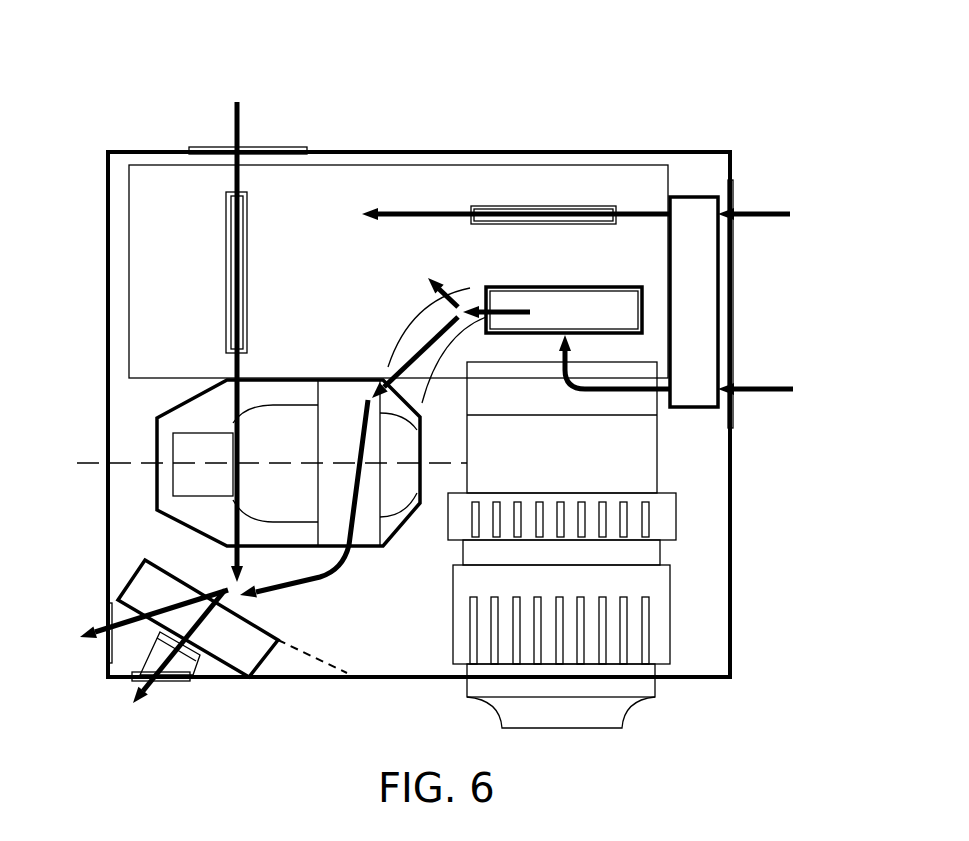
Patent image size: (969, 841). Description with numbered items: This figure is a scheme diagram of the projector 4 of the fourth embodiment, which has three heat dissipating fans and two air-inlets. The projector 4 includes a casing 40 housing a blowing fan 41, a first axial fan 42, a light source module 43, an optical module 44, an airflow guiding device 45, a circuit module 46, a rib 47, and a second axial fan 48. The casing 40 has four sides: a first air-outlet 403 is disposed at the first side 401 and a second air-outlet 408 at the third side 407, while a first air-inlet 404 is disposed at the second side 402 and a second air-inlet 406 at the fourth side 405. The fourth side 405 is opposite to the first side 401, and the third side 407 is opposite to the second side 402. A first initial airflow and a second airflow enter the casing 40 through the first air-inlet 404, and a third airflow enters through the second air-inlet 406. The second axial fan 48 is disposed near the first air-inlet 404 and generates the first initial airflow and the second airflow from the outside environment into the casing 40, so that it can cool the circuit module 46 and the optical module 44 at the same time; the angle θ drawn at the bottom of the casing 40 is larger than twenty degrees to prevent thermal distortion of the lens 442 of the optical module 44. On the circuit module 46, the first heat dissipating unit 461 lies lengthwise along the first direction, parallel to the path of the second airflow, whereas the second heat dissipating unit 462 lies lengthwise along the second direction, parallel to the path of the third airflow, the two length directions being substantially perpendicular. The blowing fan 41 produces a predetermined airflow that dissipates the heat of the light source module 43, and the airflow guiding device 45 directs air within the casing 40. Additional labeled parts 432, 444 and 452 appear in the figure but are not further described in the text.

The projector 4 is at (752, 165).
The casing 40 is at (108, 150).
The first side 401 is at (385, 678).
The second side 402 is at (730, 565).
The first air-outlet 403 is at (177, 682).
The first air-inlet 404 is at (733, 310).
The fourth side 405 is at (430, 150).
The second air-inlet 406 is at (278, 150).
The third side 407 is at (108, 525).
The second air-outlet 408 is at (108, 656).
The blowing fan 41 is at (625, 287).
The first axial fan 42 is at (127, 582).
The light source module 43 is at (157, 437).
The lens 432 is at (270, 408).
The optical module 44 is at (635, 562).
The lens 442 is at (622, 728).
The lens mount 444 is at (627, 397).
The airflow guiding device 45 is at (418, 295).
The reflecting surface 452 is at (453, 293).
The circuit module 46 is at (130, 252).
The first heat dissipating unit 461 is at (527, 206).
The second heat dissipating unit 462 is at (226, 256).
The rib 47 is at (140, 665).
The second axial fan 48 is at (690, 197).